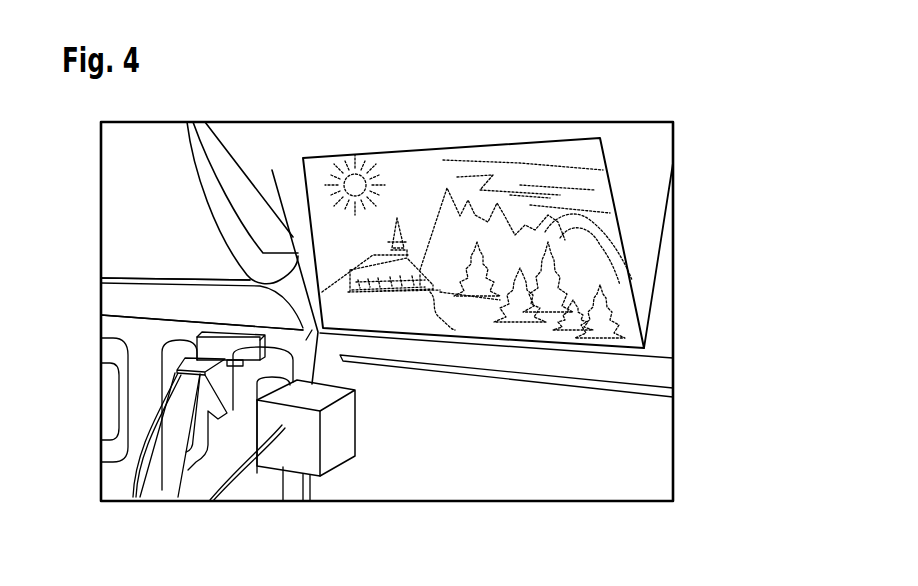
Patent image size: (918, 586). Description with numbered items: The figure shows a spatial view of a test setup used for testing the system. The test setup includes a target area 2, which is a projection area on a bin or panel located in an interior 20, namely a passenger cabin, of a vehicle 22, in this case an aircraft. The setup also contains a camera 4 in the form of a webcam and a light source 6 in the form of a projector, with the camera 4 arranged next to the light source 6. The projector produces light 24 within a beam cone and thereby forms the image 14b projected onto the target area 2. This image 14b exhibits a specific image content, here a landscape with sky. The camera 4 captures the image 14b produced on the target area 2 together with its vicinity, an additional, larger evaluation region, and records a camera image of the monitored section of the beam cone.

The target area 2 is at (663, 268).
The camera 4 is at (210, 356).
The light source 6 is at (328, 450).
The image 14b is at (620, 228).
The interior 20 is at (122, 298).
The vehicle 22 is at (160, 304).
The light 24 is at (444, 200).